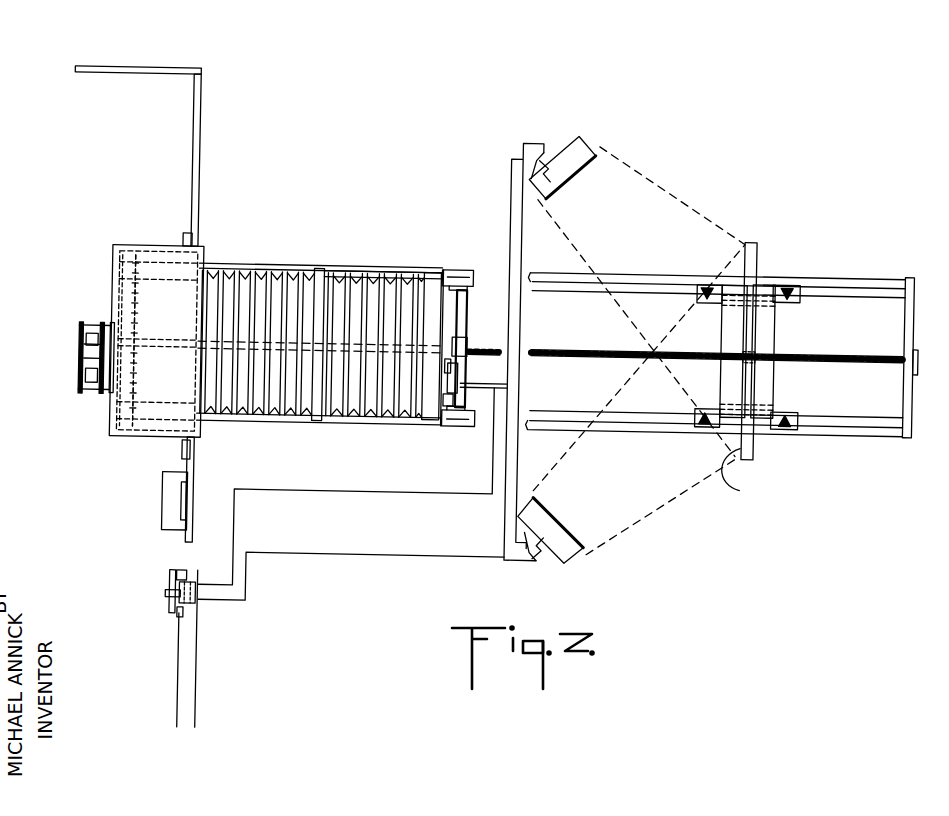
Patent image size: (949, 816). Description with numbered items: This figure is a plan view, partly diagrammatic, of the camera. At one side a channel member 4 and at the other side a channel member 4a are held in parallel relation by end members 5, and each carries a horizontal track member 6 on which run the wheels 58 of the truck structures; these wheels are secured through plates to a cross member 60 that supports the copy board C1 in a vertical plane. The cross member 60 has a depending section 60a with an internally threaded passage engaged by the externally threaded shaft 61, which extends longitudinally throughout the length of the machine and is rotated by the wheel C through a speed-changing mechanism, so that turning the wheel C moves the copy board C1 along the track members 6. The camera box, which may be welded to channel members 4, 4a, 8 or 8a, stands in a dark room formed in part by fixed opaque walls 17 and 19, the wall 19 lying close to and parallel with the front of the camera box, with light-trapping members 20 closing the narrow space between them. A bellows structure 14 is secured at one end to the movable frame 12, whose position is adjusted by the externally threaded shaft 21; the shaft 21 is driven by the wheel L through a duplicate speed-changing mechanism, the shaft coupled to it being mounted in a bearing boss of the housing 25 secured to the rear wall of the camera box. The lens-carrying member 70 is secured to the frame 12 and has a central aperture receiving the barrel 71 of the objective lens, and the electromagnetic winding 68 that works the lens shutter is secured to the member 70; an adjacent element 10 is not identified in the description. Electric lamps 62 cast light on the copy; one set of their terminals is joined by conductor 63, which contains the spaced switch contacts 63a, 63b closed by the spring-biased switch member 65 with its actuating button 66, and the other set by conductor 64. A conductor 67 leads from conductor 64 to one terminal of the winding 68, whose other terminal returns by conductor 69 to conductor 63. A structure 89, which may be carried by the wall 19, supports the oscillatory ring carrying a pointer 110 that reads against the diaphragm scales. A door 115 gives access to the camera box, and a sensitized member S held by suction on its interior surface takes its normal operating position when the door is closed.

The fixed opaque wall 17 is at (132, 74).
The fixed opaque wall 19 is at (196, 168).
The light-trapping member 20 is at (181, 242).
The sensitized member S is at (125, 383).
The externally threaded shaft 21 is at (158, 340).
The door 115 is at (110, 335).
The housing 25 is at (95, 326).
The wheel L is at (79, 326).
The wheel C is at (79, 370).
The channel member 8 is at (330, 427).
The channel member 8a is at (338, 274).
The bellows structure 14 is at (376, 280).
The movable frame 12 is at (438, 275).
The mounting plate 10 is at (466, 272).
The lens-carrying member 70 is at (466, 300).
The lens barrel 71 is at (466, 340).
The electromagnetic winding 68 is at (434, 360).
The conductor 67 is at (470, 384).
The conductor 69 is at (458, 396).
The externally threaded shaft 61 is at (474, 346).
The conductor 63 is at (508, 438).
The conductor 64 is at (508, 185).
The electric lamp 62 is at (588, 145).
The copy board C1 is at (744, 469).
The channel member 4a is at (872, 272).
The channel member 4 is at (878, 430).
The track member 6 is at (866, 291).
The end member 5 is at (918, 370).
The cross member 60 is at (762, 374).
The depending section 60a is at (755, 352).
The wheel 58 is at (792, 281).
The structure 89 is at (165, 484).
The pointer 110 is at (184, 506).
The switch contact 63a is at (181, 578).
The actuating button 66 is at (170, 598).
The switch member 65 is at (174, 605).
The switch contact 63b is at (182, 620).